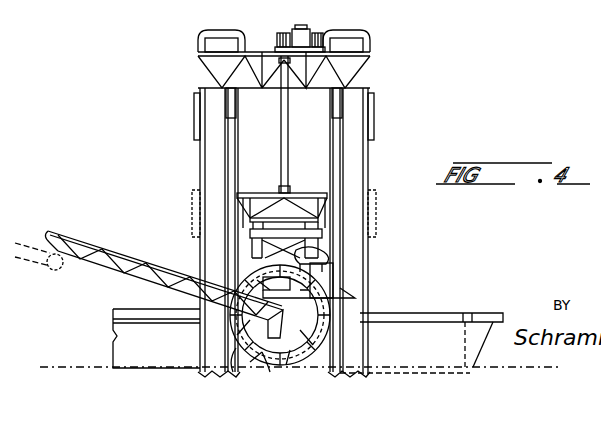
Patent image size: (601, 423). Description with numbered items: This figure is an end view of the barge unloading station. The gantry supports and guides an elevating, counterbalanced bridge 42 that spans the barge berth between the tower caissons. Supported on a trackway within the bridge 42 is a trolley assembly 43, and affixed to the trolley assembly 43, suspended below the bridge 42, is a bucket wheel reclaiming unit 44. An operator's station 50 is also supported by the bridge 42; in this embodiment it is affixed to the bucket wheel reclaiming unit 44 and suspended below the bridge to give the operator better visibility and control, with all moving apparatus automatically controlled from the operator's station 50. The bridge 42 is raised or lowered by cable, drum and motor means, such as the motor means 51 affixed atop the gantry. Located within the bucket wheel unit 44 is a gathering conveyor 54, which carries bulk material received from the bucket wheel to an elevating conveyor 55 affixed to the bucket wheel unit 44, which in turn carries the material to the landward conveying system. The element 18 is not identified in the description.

The motor means 51 is at (301, 25).
The bridge 42 is at (303, 193).
The trolley assembly 43 is at (268, 230).
The bucket wheel reclaiming unit 44 is at (238, 262).
The gathering conveyor 54 is at (323, 256).
The operator's station 50 is at (325, 277).
The elevating conveyor 55 is at (120, 250).
The base platform 18 is at (425, 313).